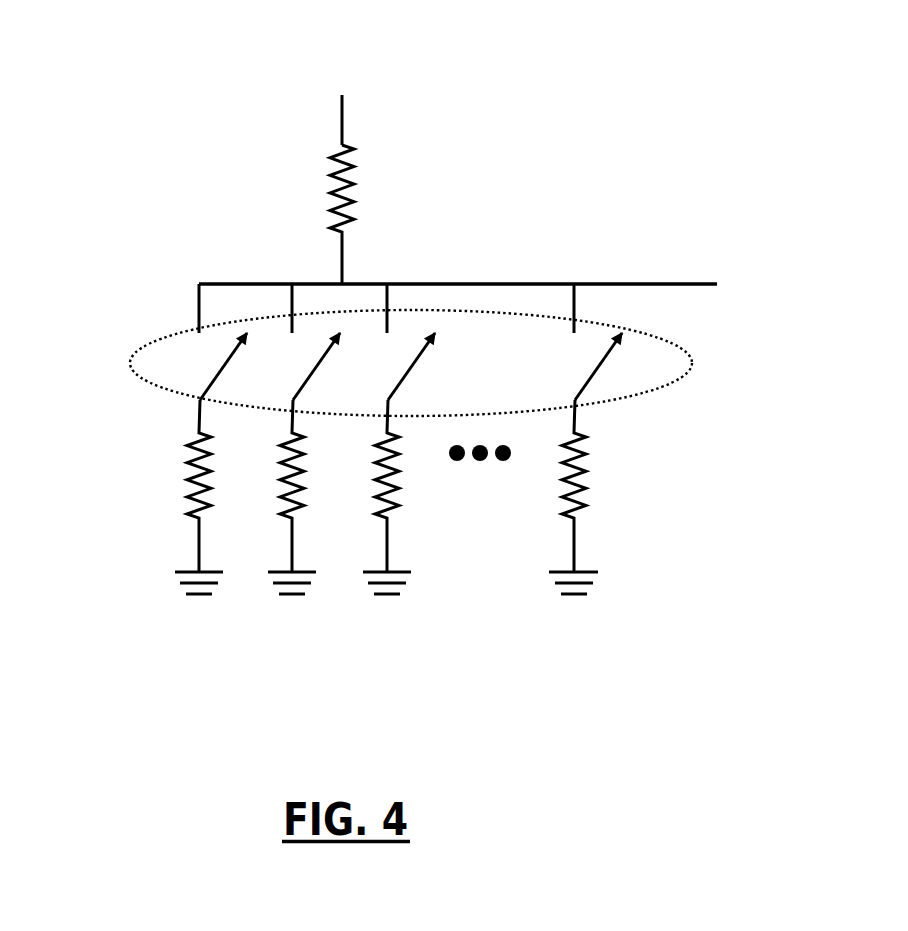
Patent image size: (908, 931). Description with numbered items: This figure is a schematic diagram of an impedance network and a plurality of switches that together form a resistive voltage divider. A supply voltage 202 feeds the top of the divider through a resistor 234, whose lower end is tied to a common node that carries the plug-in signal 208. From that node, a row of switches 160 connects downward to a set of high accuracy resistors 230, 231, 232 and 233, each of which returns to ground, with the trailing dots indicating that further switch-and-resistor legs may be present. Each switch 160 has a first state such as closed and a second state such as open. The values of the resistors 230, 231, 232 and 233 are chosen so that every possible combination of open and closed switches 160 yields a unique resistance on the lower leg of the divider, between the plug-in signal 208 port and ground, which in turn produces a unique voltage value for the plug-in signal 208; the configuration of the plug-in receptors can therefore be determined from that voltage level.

The supply voltage 202 is at (342, 77).
The resistor 234 is at (317, 175).
The plug-in signal 208 is at (538, 284).
The switches 160 is at (130, 356).
The resistor 230 is at (175, 488).
The resistor 231 is at (270, 488).
The resistor 232 is at (363, 488).
The resistor 233 is at (548, 488).